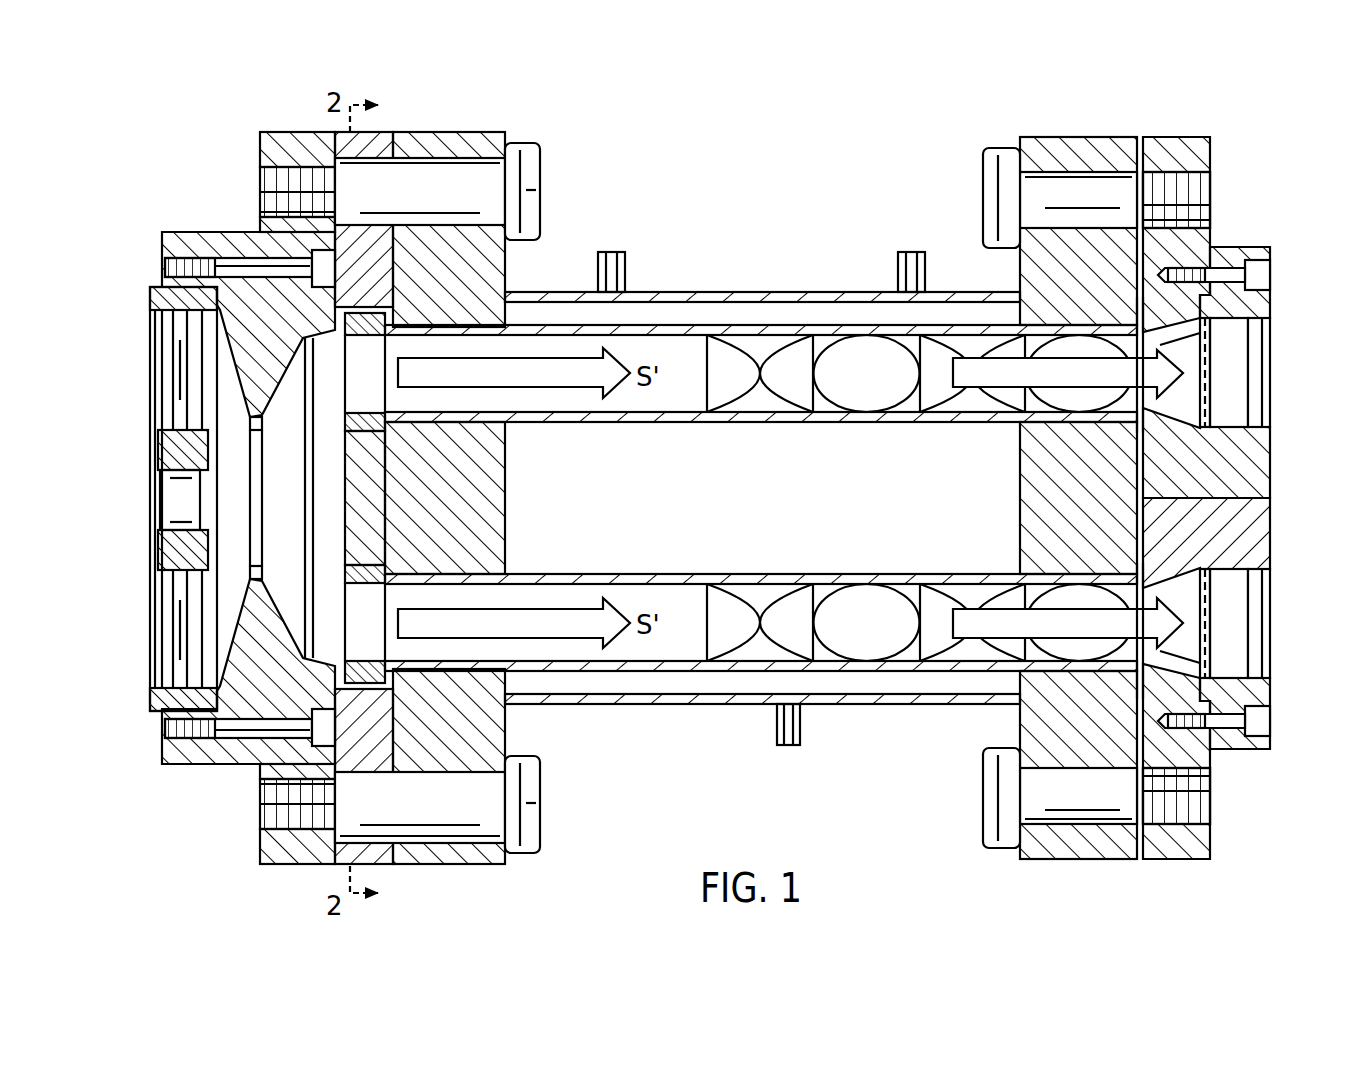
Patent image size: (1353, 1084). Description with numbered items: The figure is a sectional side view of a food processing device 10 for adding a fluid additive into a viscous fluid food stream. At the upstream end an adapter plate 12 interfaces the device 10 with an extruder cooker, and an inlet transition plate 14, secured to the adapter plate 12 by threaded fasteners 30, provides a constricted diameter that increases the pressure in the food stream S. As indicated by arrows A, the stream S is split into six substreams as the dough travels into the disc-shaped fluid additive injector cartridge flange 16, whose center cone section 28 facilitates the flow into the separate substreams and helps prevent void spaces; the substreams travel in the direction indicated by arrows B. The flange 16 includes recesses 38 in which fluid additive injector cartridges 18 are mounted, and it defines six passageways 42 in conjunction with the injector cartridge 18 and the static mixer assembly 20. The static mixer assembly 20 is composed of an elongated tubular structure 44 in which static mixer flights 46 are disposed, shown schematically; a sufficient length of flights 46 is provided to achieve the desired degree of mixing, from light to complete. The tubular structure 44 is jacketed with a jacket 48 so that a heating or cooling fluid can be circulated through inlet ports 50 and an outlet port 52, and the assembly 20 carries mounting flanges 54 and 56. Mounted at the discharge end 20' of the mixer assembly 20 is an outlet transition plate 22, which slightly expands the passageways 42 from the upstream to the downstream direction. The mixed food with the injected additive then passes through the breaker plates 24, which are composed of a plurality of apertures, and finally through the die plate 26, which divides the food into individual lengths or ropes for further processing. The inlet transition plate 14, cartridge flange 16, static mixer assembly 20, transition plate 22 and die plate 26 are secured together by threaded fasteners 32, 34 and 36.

The food processing device 10 is at (803, 128).
The adapter plate 12 is at (162, 240).
The inlet transition plate 14 is at (245, 232).
The fluid additive injector cartridge flange 16 is at (356, 131).
The fluid additive injector cartridge 18 is at (343, 377).
The static mixer assembly 20 is at (421, 473).
The discharge end 20' is at (1105, 110).
The outlet transition plate 22 is at (1165, 137).
The breaker plate 24 is at (1225, 333).
The die plate 26 is at (1240, 247).
The center cone section 28 is at (300, 497).
The threaded fasteners 30 is at (225, 262).
The threaded fasteners 32 is at (541, 186).
The threaded fasteners 34 is at (1003, 148).
The threaded fasteners 36 is at (1266, 275).
The recesses 38 is at (398, 398).
The passageways 42 is at (281, 411).
The elongated tubular structure 44 is at (680, 325).
The static mixer flights 46 is at (828, 350).
The jacket 48 is at (635, 704).
The inlet ports 50 is at (610, 252).
The outlet port 52 is at (790, 745).
The mounting flange 54 is at (432, 132).
The mounting flange 56 is at (1050, 137).
The arrows A is at (318, 410).
The arrows B is at (632, 372).
The food stream S is at (292, 572).